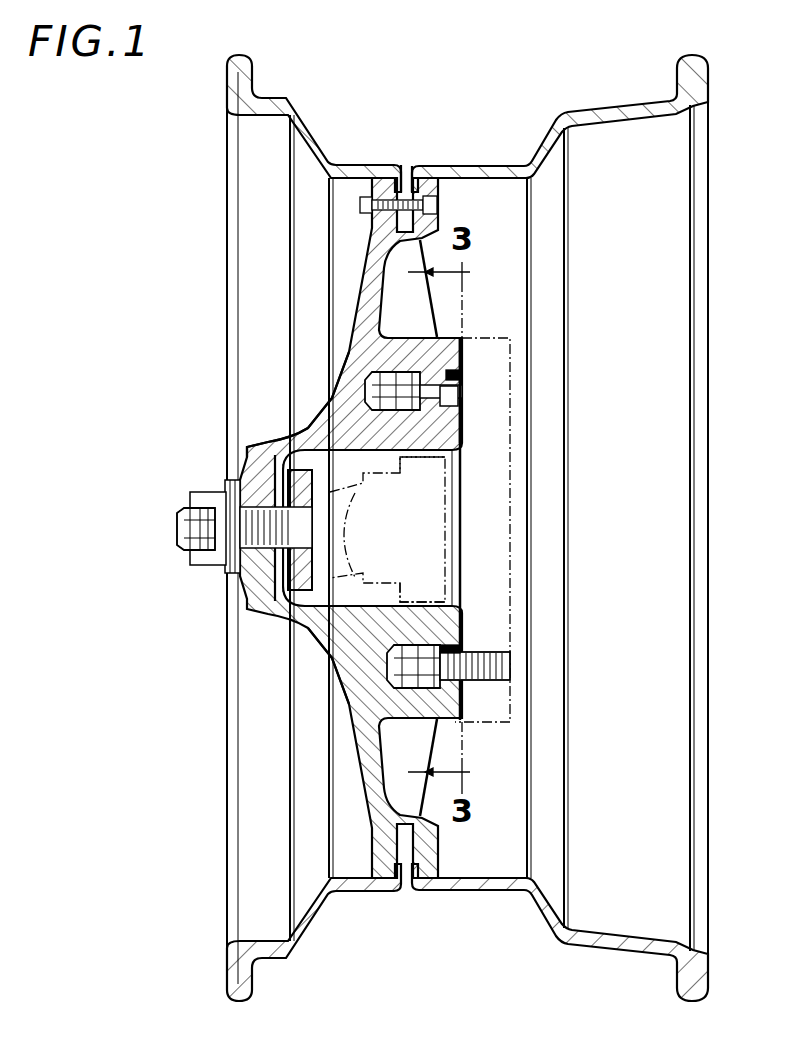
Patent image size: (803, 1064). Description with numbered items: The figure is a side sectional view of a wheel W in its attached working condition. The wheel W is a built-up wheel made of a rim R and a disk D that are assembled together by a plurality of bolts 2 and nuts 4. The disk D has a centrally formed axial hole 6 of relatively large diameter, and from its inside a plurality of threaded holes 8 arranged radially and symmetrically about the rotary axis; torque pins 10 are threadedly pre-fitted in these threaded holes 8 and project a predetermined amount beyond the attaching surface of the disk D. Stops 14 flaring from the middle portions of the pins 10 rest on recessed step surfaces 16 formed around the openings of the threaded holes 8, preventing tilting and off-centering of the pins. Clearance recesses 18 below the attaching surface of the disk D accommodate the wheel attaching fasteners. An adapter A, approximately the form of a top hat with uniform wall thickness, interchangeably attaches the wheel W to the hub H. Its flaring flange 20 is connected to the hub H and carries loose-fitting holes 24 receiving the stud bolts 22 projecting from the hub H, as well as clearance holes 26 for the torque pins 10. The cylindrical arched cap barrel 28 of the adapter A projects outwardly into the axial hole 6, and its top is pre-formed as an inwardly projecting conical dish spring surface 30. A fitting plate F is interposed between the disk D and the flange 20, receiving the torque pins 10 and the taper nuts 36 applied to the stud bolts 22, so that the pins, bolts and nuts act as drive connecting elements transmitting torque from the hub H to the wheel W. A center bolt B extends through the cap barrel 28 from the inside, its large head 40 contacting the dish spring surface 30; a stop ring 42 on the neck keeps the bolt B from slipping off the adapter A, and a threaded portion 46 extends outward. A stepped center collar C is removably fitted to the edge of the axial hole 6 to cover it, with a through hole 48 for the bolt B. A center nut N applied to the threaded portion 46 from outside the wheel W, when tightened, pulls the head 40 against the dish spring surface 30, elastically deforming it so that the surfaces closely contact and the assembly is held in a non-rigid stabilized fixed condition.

The bolts 2 is at (362, 207).
The nuts 4 is at (432, 188).
The axial hole 6 is at (318, 407).
The threaded holes 8 is at (365, 380).
The torque pins 10 is at (462, 408).
The stops 14 is at (422, 448).
The recessed step surfaces 16 is at (400, 334).
The clearance recesses 18 is at (368, 692).
The flaring flange 20 is at (470, 722).
The stud bolts 22 is at (512, 664).
The loose-fitting holes 24 is at (462, 650).
The clearance holes 26 is at (463, 379).
The cap barrel 28 is at (408, 620).
The dish spring surface 30 is at (237, 566).
The taper nuts 36 is at (408, 767).
The head 40 is at (308, 575).
The stop ring 42 is at (302, 526).
The threaded portion 46 is at (178, 524).
The through hole 48 is at (212, 500).
The wheel W is at (220, 202).
The rim R is at (598, 108).
The disk D is at (375, 822).
The hub H is at (515, 355).
The center bolt B is at (356, 495).
The fitting plate F is at (464, 340).
The center collar C is at (258, 447).
The center nut N is at (190, 560).
The adapter A is at (293, 640).